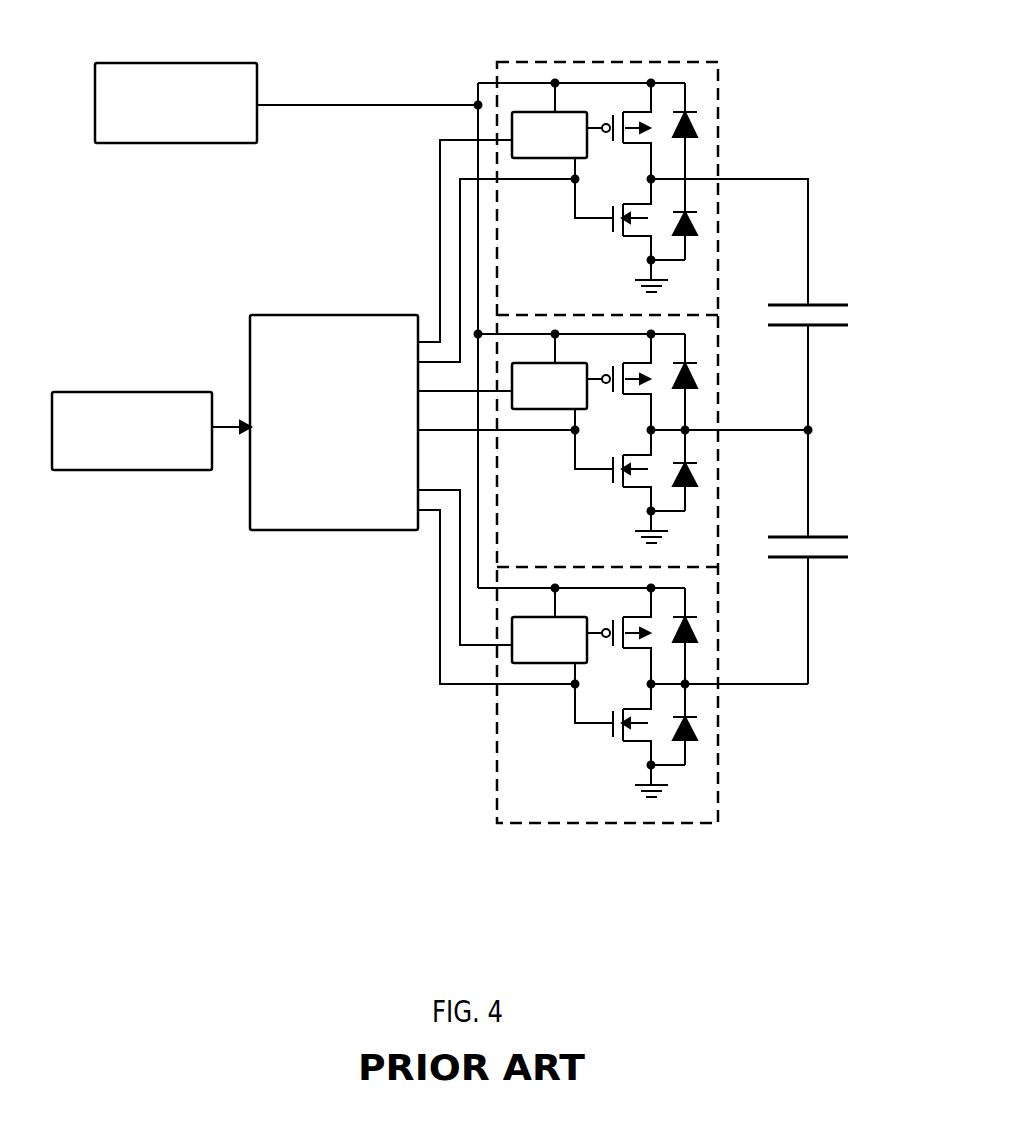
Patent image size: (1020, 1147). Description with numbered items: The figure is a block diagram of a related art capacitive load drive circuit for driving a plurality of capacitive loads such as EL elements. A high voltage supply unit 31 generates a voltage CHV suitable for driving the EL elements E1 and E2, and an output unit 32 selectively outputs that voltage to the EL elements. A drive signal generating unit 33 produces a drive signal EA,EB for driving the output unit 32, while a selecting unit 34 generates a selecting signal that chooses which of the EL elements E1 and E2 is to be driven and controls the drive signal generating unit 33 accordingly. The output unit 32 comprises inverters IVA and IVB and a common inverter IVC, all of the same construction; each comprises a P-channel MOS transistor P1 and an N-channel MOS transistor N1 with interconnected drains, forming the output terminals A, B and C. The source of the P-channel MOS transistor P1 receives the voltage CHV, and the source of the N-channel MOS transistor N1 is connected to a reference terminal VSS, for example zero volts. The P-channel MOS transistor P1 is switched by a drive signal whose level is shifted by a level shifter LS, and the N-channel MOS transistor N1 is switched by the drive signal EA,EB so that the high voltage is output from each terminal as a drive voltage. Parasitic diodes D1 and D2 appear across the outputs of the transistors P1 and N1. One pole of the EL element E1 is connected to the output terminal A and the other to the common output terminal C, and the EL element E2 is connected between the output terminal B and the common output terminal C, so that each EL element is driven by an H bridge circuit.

The high voltage supply unit 31 is at (193, 143).
The output unit 32 is at (478, 774).
The drive signal generating unit 33 is at (340, 530).
The selecting unit 34 is at (147, 470).
The voltage CHV is at (369, 334).
The inverter IVA is at (673, 167).
The inverter IVB is at (722, 762).
The common inverter IVC is at (722, 515).
The level shifter LS is at (530, 158).
The P-channel MOS transistor P1 is at (632, 147).
The N-channel MOS transistor N1 is at (632, 239).
The parasitic diode D1 is at (700, 121).
The parasitic diode D2 is at (700, 239).
The reference terminal VSS is at (668, 290).
The output terminal A is at (810, 190).
The output terminal B is at (808, 597).
The common output terminal C is at (766, 430).
The EL element E1 is at (836, 327).
The EL element E2 is at (836, 559).
The drive signal EA,EB is at (222, 422).